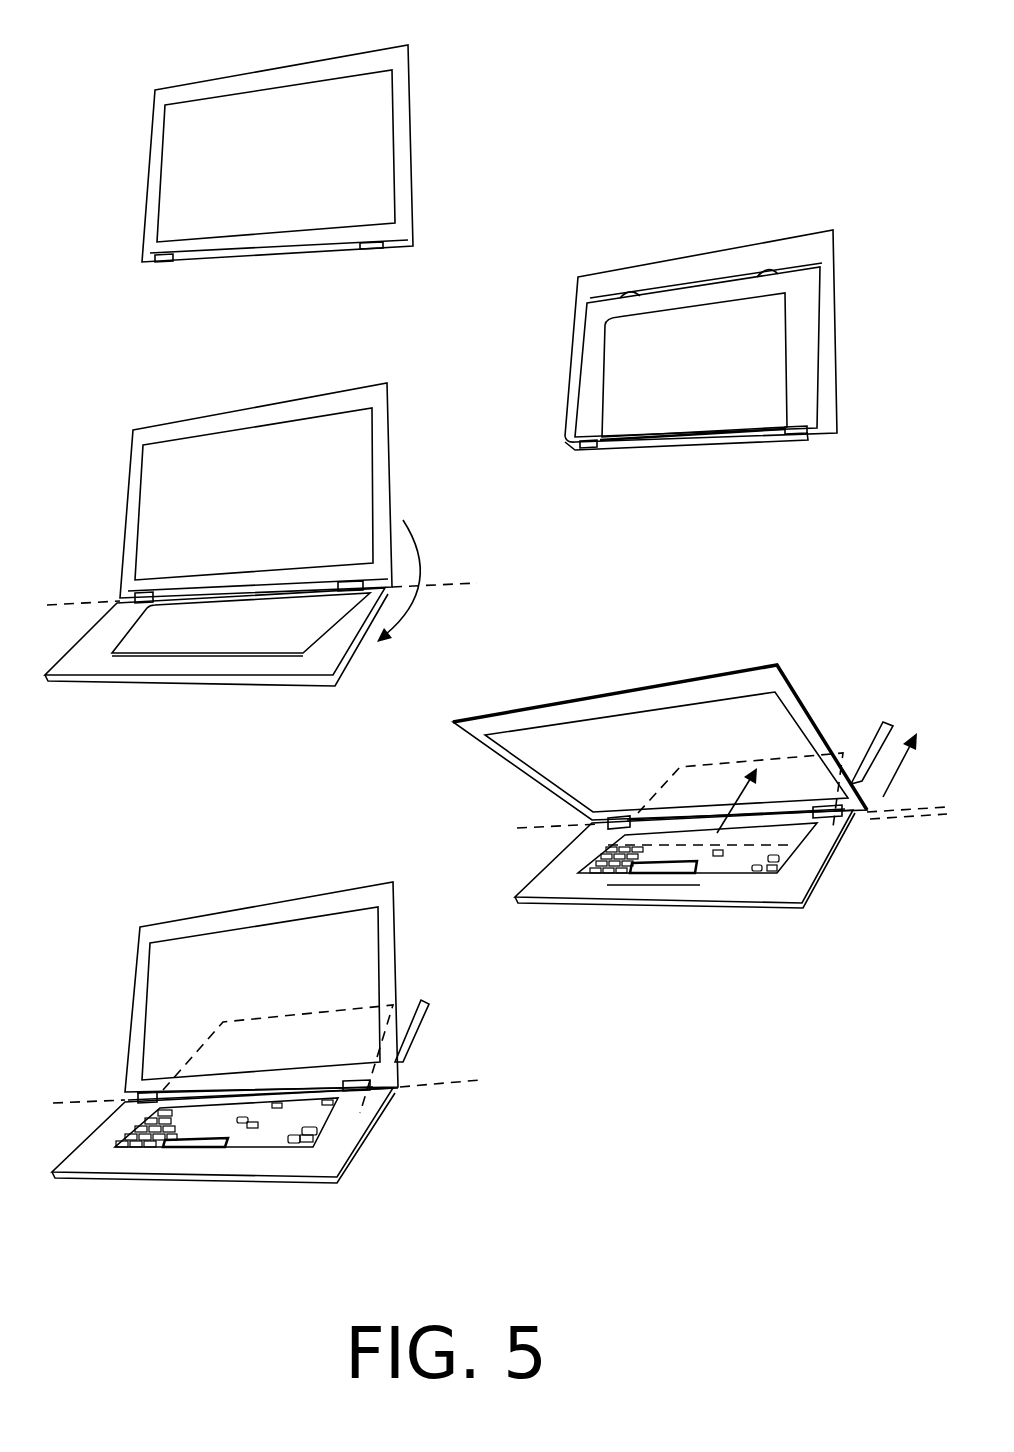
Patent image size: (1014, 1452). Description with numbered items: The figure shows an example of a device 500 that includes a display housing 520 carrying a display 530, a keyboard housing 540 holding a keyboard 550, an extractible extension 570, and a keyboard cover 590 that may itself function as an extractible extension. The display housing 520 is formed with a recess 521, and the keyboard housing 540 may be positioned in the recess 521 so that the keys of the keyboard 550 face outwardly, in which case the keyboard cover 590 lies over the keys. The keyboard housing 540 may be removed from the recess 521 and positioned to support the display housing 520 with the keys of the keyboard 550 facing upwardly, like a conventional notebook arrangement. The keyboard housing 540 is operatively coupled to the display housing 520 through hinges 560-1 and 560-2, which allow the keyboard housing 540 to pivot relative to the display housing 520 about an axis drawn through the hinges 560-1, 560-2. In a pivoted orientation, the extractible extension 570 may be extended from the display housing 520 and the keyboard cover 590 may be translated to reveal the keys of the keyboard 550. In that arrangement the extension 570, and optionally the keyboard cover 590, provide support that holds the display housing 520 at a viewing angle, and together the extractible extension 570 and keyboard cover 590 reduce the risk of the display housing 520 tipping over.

The device 500 is at (206, 26).
The display housing 520 is at (147, 227).
The recess 521 is at (827, 363).
The display 530 is at (298, 156).
The keyboard housing 540 is at (723, 278).
The keyboard 550 is at (270, 1143).
The hinge 560-1 is at (162, 262).
The hinge 560-2 is at (375, 248).
The extractible extension 570 is at (423, 1013).
The keyboard cover 590 is at (720, 366).